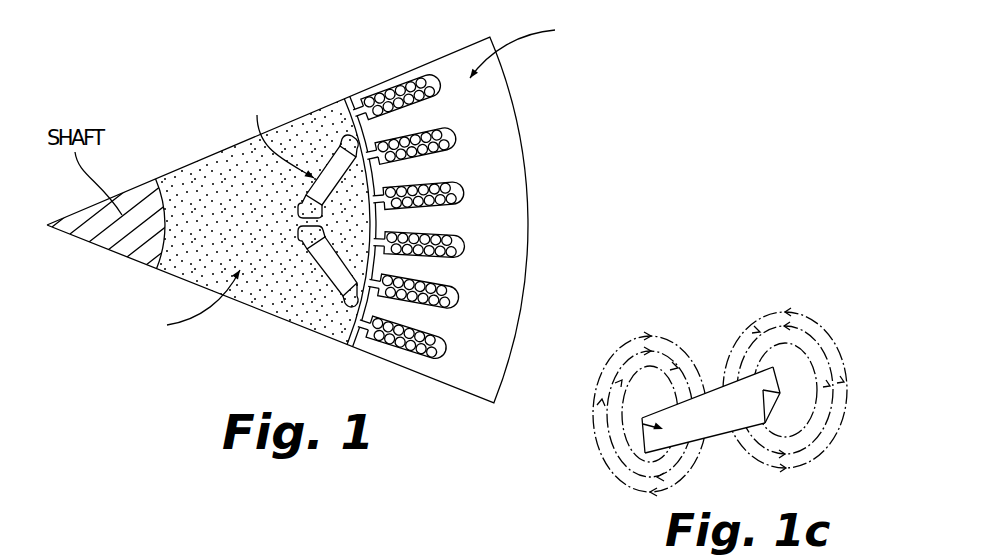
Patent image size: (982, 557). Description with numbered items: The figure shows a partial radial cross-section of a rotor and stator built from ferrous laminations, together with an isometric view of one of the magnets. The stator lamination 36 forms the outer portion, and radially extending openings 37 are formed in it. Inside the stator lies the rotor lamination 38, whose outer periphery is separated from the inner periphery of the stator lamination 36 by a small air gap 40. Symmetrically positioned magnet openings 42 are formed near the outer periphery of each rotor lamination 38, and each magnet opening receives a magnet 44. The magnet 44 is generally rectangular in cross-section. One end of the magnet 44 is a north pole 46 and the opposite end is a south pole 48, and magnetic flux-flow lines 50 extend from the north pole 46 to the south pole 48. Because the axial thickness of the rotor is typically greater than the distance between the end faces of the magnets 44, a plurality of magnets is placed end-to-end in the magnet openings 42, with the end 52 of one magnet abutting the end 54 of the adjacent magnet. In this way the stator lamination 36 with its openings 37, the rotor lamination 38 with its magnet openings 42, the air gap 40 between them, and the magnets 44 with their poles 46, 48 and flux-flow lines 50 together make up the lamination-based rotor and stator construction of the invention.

In FIG. 1, the stator lamination 36 is at (490, 115).
In FIG. 1, the radially extending openings 37 is at (425, 208).
In FIG. 1, the rotor lamination 38 is at (217, 190).
In FIG. 1, the air gap 40 is at (348, 338).
In FIG. 1, the magnet openings 42 is at (340, 146).
In FIG. 1, the magnet 44 is at (318, 278).
In FIG. 1C, the magnet 44 is at (620, 433).
In FIG. 1C, the north pole 46 is at (682, 422).
In FIG. 1C, the south pole 48 is at (714, 372).
In FIG. 1C, the magnetic flux-flow lines 50 is at (835, 335).
In FIG. 1C, the end of one magnet 52 is at (778, 396).
In FIG. 1C, the end of the adjacent magnet 54 is at (640, 420).